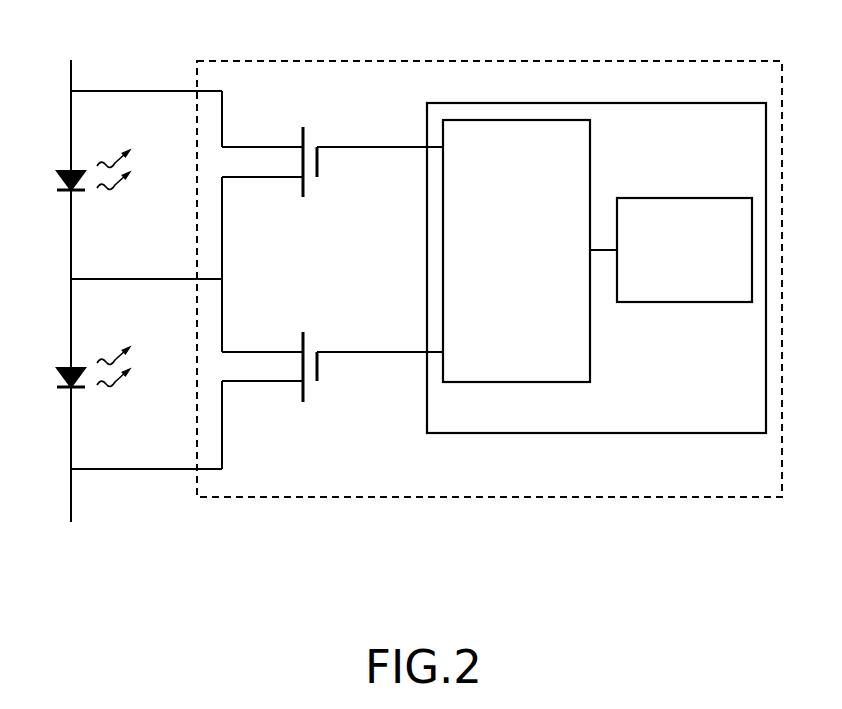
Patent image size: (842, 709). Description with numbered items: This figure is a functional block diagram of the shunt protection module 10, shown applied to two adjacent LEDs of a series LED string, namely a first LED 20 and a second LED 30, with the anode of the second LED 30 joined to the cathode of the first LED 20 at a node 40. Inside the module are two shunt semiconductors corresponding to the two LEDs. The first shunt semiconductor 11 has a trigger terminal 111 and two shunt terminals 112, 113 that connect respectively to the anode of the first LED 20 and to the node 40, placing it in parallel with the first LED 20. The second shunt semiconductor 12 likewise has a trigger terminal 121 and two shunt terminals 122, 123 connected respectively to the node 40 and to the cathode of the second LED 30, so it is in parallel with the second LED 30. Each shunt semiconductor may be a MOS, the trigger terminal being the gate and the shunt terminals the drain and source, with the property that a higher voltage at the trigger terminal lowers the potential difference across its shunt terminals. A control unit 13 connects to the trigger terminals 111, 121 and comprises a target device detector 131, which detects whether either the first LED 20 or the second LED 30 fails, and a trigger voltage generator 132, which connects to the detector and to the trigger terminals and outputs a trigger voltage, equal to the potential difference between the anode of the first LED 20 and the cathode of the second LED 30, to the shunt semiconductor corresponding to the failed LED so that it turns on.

The shunt protection module 10 is at (557, 497).
The first shunt semiconductor 11 is at (332, 158).
The trigger terminal 111 is at (350, 148).
The shunt terminal 112 is at (250, 148).
The shunt terminal 113 is at (250, 177).
The second shunt semiconductor 12 is at (332, 365).
The trigger terminal 121 is at (350, 352).
The shunt terminal 122 is at (250, 352).
The shunt terminal 123 is at (250, 381).
The control unit 13 is at (596, 298).
The target device detector 131 is at (685, 198).
The trigger voltage generator 132 is at (592, 168).
The first LED 20 is at (88, 203).
The second LED 30 is at (100, 394).
The node 40 is at (71, 279).